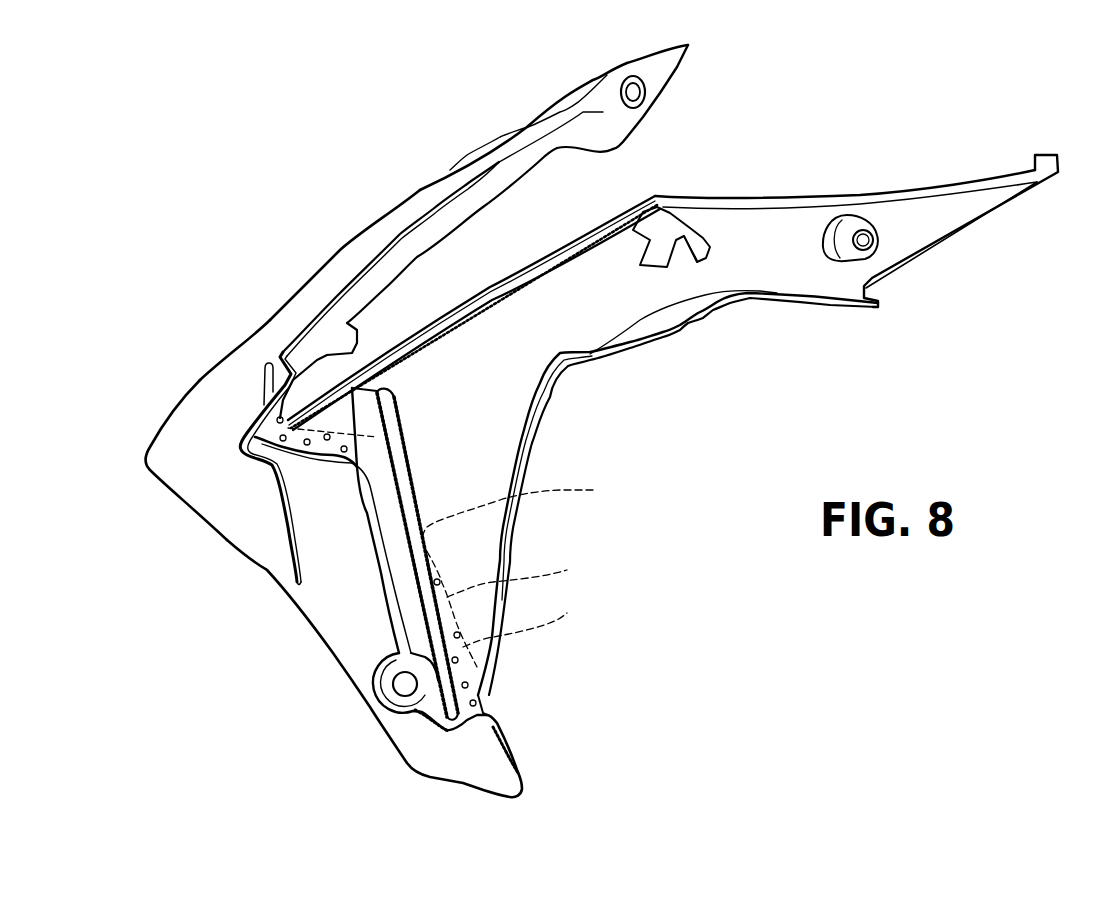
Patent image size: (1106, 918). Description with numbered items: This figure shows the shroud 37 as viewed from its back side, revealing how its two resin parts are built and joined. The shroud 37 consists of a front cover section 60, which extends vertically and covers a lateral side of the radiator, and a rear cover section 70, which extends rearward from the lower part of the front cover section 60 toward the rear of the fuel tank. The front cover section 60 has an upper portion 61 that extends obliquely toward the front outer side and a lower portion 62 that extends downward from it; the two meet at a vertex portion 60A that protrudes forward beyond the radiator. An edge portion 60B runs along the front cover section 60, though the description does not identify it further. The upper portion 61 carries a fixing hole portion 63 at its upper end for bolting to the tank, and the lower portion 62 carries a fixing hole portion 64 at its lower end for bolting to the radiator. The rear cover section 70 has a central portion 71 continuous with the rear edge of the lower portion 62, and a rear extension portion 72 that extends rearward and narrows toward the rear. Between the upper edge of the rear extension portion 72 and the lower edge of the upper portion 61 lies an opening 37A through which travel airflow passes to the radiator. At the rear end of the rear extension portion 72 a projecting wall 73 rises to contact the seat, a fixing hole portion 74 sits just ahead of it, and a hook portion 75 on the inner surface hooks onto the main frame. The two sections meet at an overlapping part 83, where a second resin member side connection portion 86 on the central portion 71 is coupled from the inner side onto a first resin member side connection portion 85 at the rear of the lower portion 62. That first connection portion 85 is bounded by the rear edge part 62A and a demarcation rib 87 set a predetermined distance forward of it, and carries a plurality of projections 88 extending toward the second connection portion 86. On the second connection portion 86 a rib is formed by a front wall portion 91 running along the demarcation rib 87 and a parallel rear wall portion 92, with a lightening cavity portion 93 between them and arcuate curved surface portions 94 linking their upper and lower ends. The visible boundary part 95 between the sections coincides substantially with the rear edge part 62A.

The shroud 37 is at (340, 110).
The opening 37A is at (438, 280).
The front cover section 60 is at (213, 337).
The vertex portion 60A is at (173, 452).
The rim flange of side cover 60B is at (403, 232).
The upper portion 61 is at (338, 268).
The lower portion 62 is at (320, 600).
The rear edge part 62A is at (530, 576).
The fixing hole portion 63 is at (630, 76).
The fixing hole portion 64 is at (393, 694).
The rear cover section 70 is at (743, 240).
The central portion 71 is at (450, 537).
The rear extension portion 72 is at (778, 227).
The projecting wall 73 is at (1045, 155).
The fixing hole portion 74 is at (852, 226).
The hook portion 75 is at (702, 232).
The overlapping part 83 is at (450, 561).
The first resin member side connection portion 85 is at (531, 619).
The second resin member side connection portion 86 is at (485, 640).
The demarcation rib 87 is at (377, 557).
The projections 88 is at (470, 683).
The front wall portion 91 is at (385, 495).
The rear wall portion 92 is at (417, 527).
The lightening cavity portion 93 is at (393, 503).
The arcuate curved surface portions 94 is at (376, 391).
The boundary part 95 is at (593, 490).